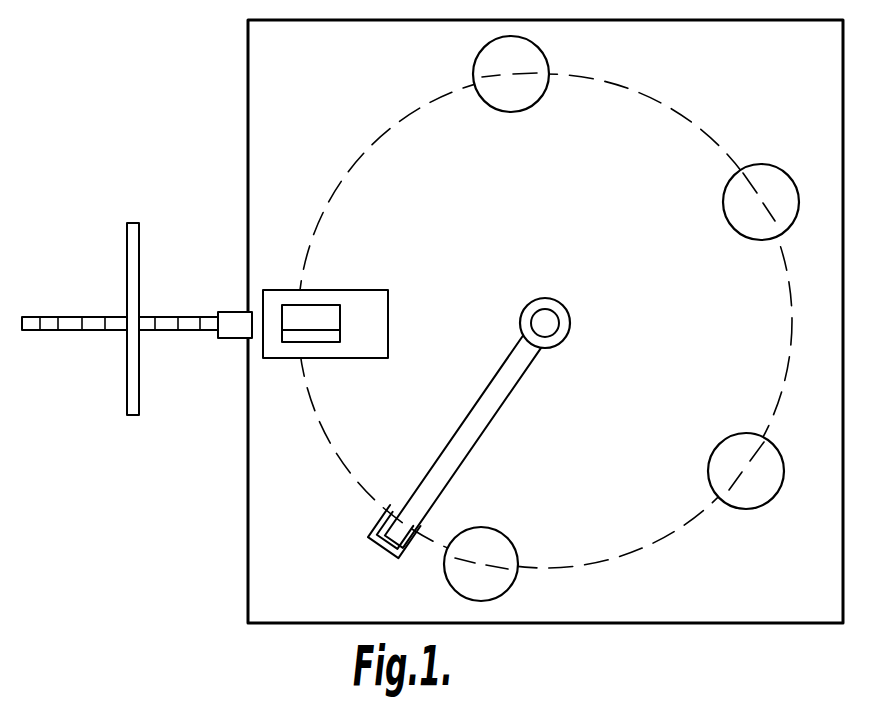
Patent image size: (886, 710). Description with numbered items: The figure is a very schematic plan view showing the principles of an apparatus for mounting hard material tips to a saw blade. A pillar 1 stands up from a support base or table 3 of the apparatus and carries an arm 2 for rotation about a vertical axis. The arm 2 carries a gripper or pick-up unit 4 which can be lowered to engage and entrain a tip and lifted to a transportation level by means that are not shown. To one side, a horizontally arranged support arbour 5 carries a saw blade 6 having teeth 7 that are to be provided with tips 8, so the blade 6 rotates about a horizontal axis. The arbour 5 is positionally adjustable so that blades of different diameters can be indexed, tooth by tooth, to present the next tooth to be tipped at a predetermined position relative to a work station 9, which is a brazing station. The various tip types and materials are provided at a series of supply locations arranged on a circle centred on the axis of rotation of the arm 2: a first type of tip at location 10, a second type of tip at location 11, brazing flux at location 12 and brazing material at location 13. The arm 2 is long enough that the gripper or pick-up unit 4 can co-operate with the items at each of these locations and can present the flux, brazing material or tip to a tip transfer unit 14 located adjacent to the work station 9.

The pillar 1 is at (552, 313).
The arm 2 is at (462, 417).
The support base or table 3 is at (334, 107).
The gripper or pick-up unit 4 is at (368, 536).
The support arbour 5 is at (127, 250).
The saw blade 6 is at (72, 316).
The teeth 7 is at (100, 333).
The tips 8 is at (227, 312).
The work station 9 is at (287, 281).
The location 10 is at (533, 63).
The location 11 is at (780, 185).
The location 12 is at (767, 488).
The location 13 is at (502, 555).
The tip transfer unit 14 is at (320, 313).